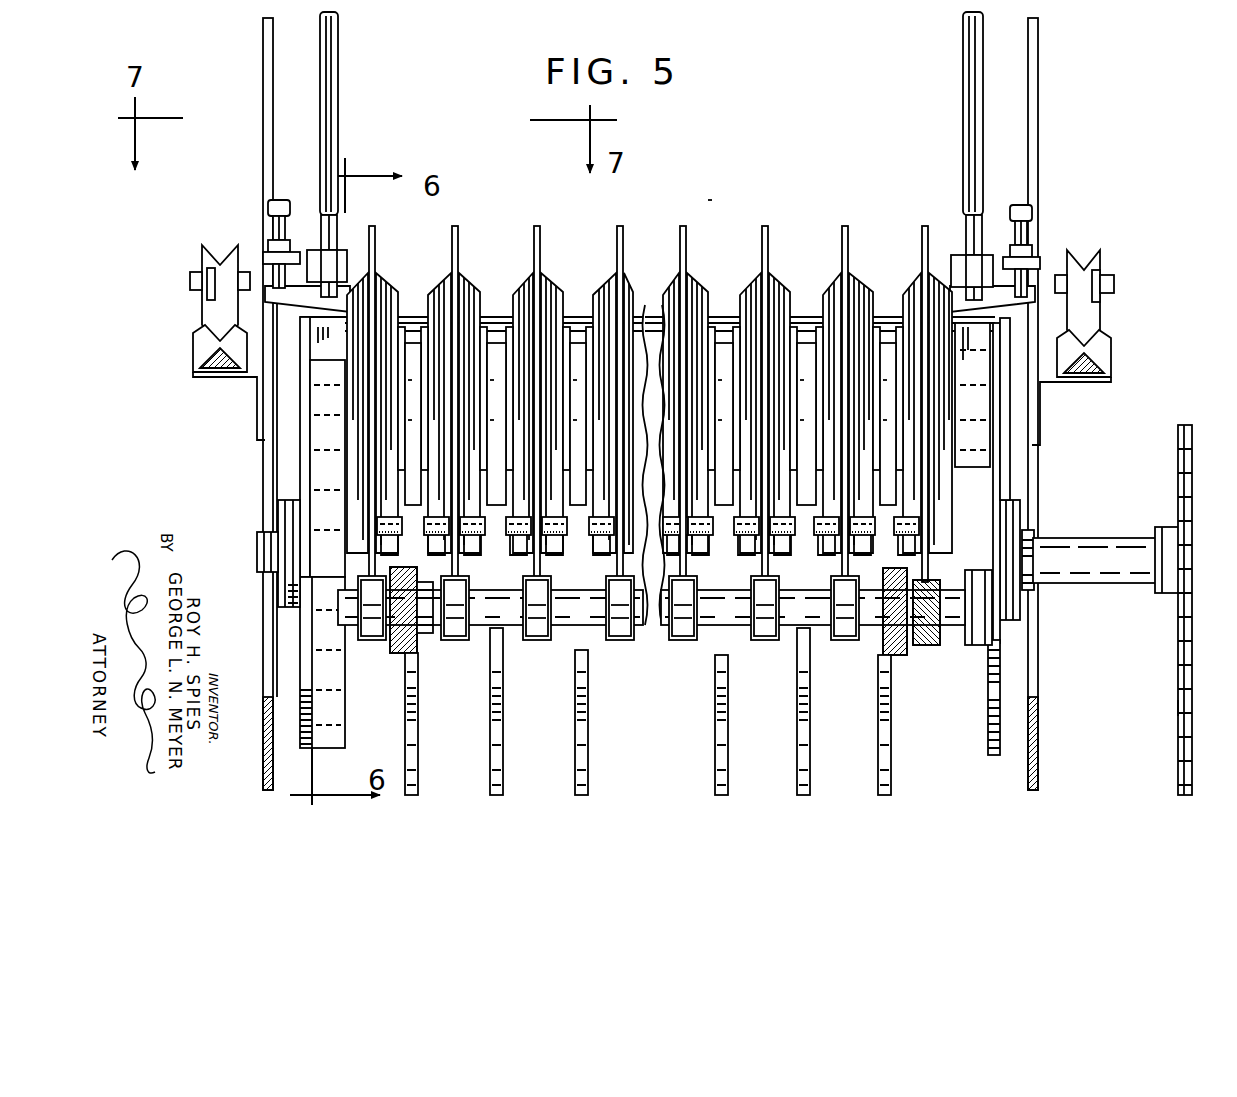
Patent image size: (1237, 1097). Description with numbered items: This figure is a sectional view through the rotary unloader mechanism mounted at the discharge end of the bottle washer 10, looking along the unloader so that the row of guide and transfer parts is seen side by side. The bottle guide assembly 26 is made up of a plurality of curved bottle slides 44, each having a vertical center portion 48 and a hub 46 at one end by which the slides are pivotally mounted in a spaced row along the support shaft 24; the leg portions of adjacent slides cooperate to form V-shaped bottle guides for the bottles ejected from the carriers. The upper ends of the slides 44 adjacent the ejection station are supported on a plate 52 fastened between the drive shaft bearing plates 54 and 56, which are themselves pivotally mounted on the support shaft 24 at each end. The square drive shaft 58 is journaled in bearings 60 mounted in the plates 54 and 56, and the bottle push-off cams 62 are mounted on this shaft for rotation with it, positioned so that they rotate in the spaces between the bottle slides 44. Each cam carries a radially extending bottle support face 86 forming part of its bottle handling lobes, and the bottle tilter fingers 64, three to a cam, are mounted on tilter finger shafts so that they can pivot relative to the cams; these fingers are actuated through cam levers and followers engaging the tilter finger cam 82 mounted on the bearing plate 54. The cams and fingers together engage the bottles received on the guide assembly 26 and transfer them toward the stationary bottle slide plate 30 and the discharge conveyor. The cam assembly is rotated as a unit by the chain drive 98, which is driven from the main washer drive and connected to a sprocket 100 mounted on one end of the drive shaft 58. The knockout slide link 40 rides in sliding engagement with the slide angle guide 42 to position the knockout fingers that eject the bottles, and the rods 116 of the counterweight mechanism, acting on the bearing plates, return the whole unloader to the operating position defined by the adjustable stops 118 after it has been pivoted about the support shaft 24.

The bottle washer 10 is at (1047, 73).
The rods 116 is at (328, 66).
The adjustable stops 118 is at (271, 228).
The knockout slide link 40 is at (205, 276).
The slide angle guide 42 is at (202, 352).
The drive shaft bearing plate 54 is at (303, 388).
The tilter finger cam 82 is at (323, 423).
The bearings 60 is at (272, 530).
The square drive shaft 58 is at (260, 576).
The plate 52 is at (977, 420).
The drive shaft bearing plate 56 is at (997, 480).
The sprocket 100 is at (1185, 425).
The chain drive 98 is at (1177, 707).
The stationary bottle slide plate 30 is at (640, 521).
The bottle tilter fingers 64 is at (412, 332).
The curved bottle slides 44 is at (448, 242).
The vertical center portion 48 is at (457, 222).
The support shaft 24 is at (725, 605).
The hubs 46 is at (372, 640).
The bottle push-off cams 62 is at (420, 756).
The bottle support face 86 is at (493, 767).
The bottle guide assembly 26 is at (714, 195).